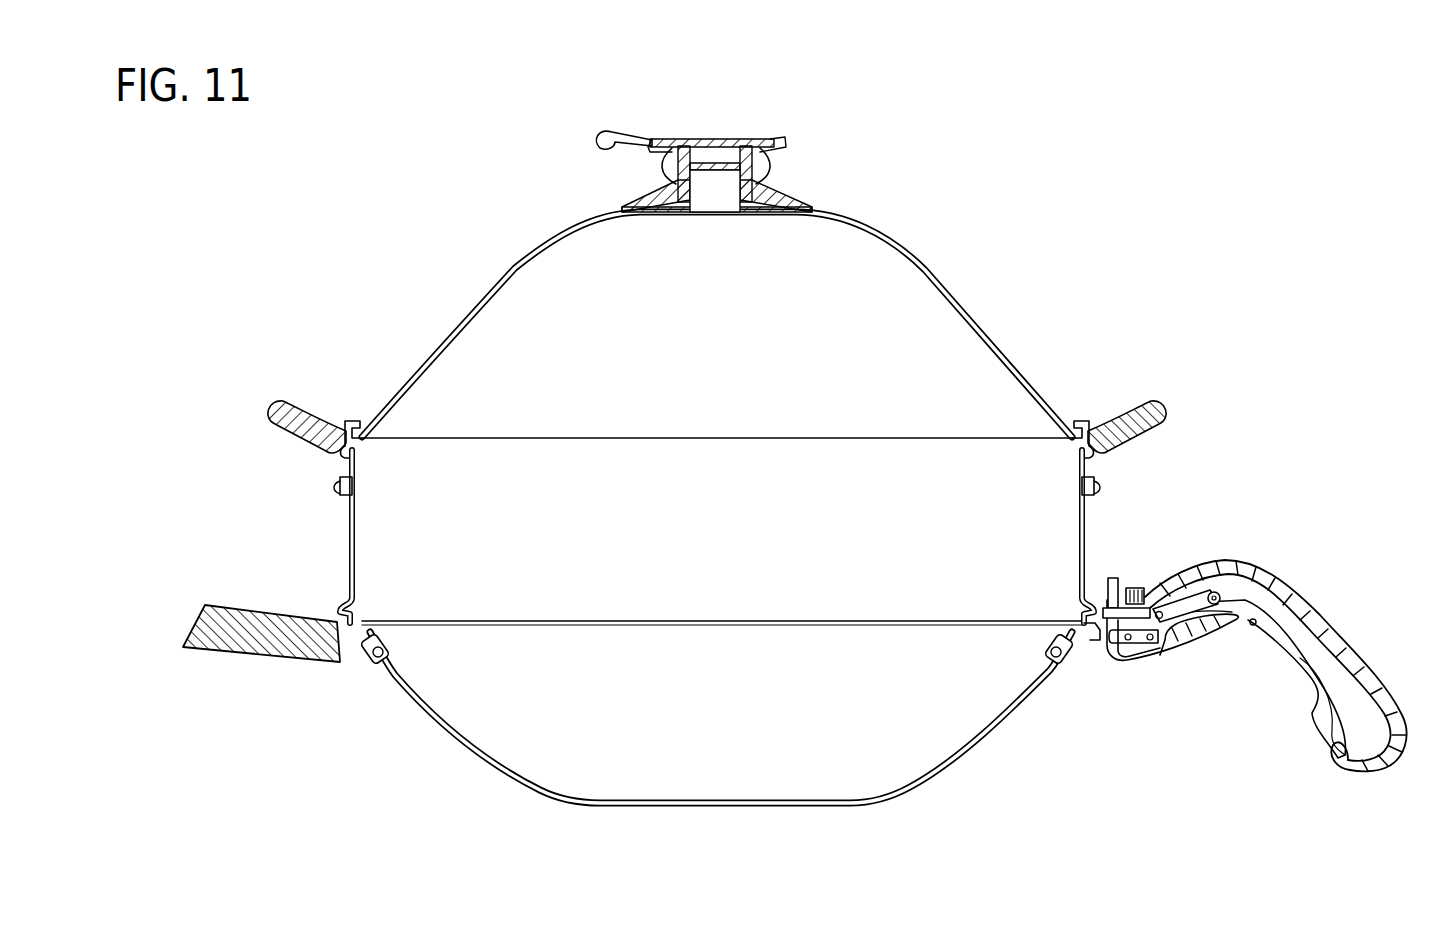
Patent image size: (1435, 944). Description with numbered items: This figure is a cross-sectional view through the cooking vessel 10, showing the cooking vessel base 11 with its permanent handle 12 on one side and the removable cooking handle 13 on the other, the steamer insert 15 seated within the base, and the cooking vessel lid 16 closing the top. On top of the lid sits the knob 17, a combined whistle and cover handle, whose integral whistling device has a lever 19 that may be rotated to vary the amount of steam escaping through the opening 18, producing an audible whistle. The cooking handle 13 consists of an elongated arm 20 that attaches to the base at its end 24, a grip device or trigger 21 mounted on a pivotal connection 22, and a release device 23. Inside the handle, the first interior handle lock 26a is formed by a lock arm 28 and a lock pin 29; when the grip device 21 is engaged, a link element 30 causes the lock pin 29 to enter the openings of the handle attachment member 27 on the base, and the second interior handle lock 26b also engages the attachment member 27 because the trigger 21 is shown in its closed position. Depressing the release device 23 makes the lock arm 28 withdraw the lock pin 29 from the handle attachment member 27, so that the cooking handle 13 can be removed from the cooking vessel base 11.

The cooking vessel 10 is at (1195, 184).
The cooking vessel base 11 is at (457, 740).
The permanent handle 12 is at (270, 662).
The cooking handle 13 is at (1387, 770).
The steamer insert 15 is at (351, 562).
The cooking vessel lid 16 is at (514, 268).
The knob 17 is at (788, 134).
The opening 18 is at (697, 146).
The lever 19 is at (606, 132).
The elongated arm 20 is at (1350, 652).
The grip device 21 is at (1317, 684).
The pivotal connection 22 is at (1253, 628).
The release device 23 is at (1112, 580).
The end 24 is at (1095, 641).
The first interior handle lock 26a is at (1140, 592).
The second interior handle lock 26b is at (1148, 640).
The handle attachment member 27 is at (1068, 645).
The lock arm 28 is at (1128, 588).
The lock pin 29 is at (1125, 644).
The link element 30 is at (1197, 602).